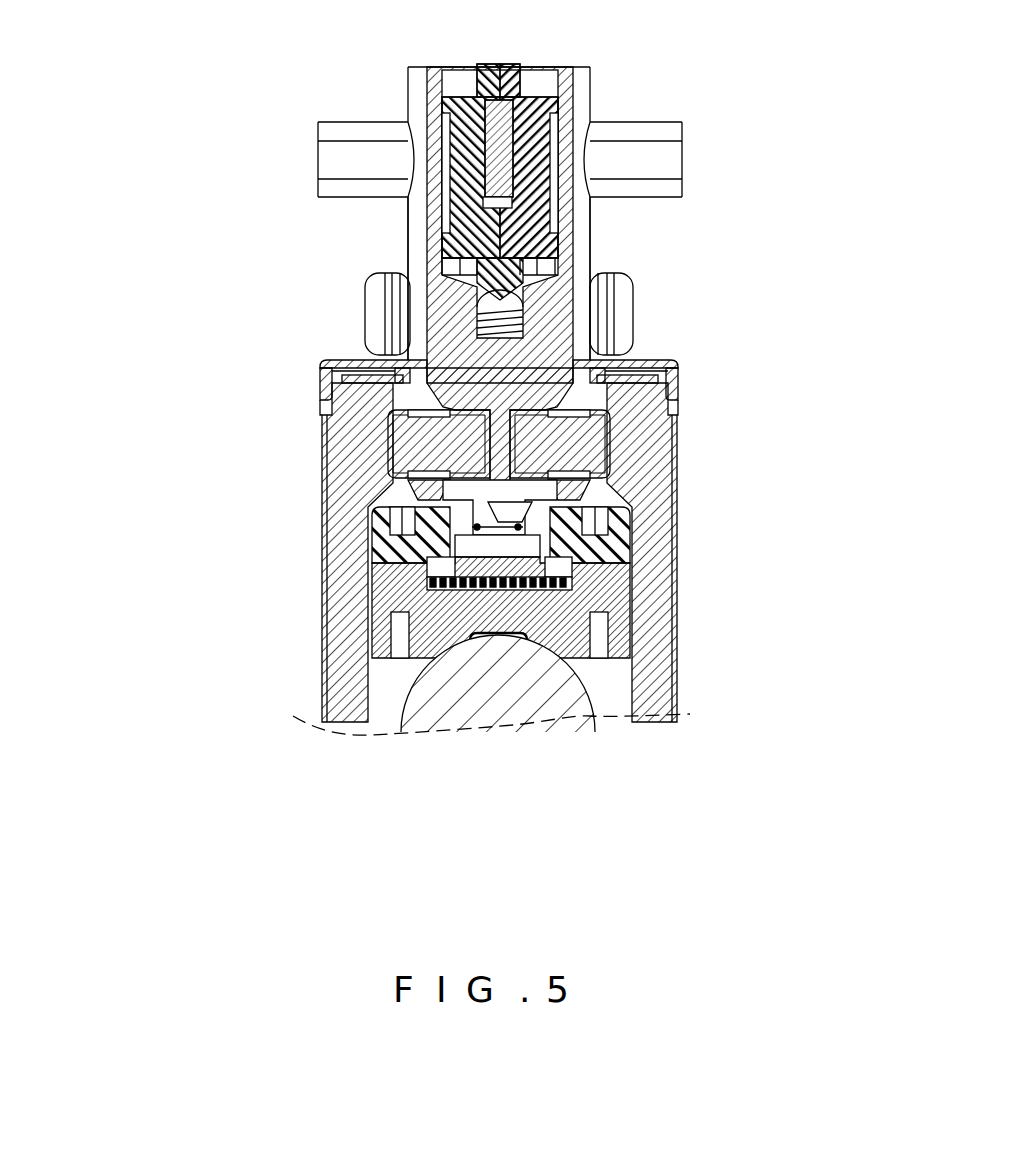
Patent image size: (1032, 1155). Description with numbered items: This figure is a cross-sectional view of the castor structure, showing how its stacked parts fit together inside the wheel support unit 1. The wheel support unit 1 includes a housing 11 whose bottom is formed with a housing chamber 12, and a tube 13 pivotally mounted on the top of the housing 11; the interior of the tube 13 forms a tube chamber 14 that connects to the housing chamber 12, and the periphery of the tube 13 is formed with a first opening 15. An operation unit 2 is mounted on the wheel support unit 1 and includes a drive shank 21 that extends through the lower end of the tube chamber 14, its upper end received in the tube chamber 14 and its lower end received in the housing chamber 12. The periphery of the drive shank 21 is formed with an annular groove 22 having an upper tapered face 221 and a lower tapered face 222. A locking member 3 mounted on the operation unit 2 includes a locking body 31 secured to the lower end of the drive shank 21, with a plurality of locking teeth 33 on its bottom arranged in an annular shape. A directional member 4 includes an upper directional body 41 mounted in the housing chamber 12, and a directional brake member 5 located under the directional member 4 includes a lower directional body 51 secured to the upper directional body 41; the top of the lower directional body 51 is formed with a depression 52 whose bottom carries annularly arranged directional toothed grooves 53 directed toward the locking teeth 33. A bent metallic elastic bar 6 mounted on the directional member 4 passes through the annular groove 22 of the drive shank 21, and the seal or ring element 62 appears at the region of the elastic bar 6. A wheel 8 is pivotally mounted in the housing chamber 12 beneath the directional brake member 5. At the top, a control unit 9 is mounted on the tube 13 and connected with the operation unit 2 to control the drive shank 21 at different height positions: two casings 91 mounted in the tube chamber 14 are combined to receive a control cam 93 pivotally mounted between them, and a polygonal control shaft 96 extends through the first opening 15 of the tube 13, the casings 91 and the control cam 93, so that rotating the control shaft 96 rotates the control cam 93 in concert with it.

The wheel support unit 1 is at (506, 411).
The housing 11 is at (342, 717).
The housing chamber 12 is at (390, 717).
The tube 13 is at (582, 93).
The tube chamber 14 is at (553, 147).
The first opening 15 is at (588, 192).
The operation unit 2 is at (798, 375).
The drive shank 21 is at (583, 432).
The upper tapered face 221 is at (520, 498).
The annular groove 22 is at (612, 503).
The lower tapered face 222 is at (522, 527).
The locking member 3 is at (632, 588).
The locking body 31 is at (567, 568).
The locking teeth 33 is at (572, 583).
The directional member 4 is at (435, 488).
The upper directional body 41 is at (372, 535).
The directional brake member 5 is at (349, 612).
The lower directional body 51 is at (380, 647).
The depression 52 is at (430, 570).
The directional toothed grooves 53 is at (432, 595).
The elastic bar 6 is at (188, 393).
The stem seal 62 is at (477, 527).
The wheel 8 is at (543, 702).
The control unit 9 is at (449, 161).
The casings 91 is at (452, 148).
The control cam 93 is at (497, 182).
The control shaft 96 is at (338, 160).